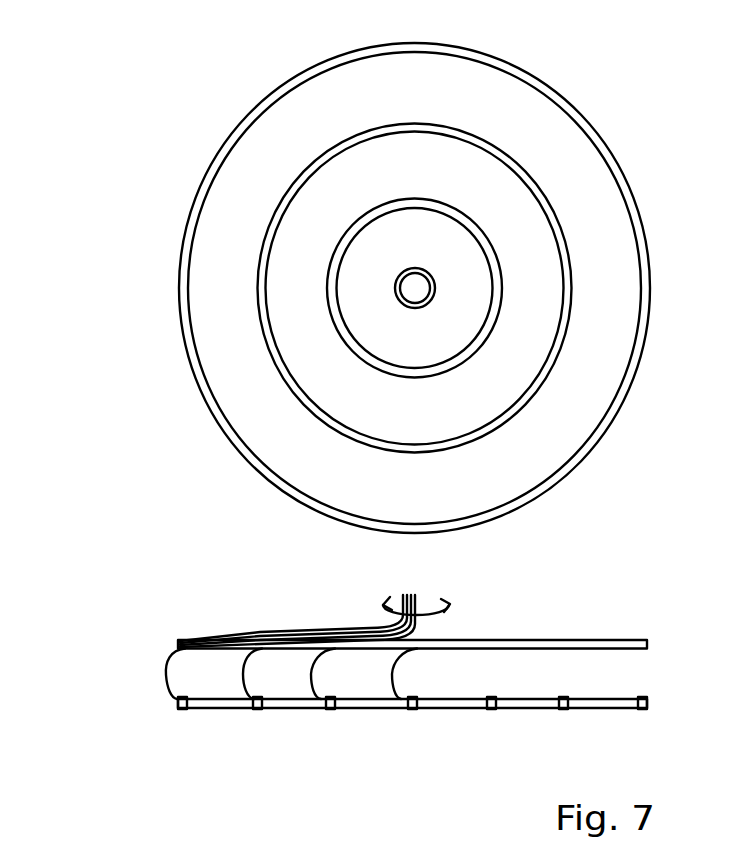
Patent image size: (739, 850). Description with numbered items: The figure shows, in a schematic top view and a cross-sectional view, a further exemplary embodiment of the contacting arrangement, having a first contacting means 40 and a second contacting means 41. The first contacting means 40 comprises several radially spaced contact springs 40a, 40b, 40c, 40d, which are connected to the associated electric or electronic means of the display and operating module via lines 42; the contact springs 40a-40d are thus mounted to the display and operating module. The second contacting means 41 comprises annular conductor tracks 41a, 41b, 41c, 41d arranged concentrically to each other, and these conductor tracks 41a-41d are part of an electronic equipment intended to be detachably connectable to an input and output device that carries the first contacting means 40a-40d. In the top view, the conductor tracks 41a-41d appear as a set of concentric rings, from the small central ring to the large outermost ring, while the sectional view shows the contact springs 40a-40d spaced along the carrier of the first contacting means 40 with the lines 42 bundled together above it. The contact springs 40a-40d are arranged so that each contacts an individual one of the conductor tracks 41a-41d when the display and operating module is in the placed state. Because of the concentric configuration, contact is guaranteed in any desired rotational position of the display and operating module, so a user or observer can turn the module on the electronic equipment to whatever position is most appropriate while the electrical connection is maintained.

The first contacting means 40 is at (350, 674).
The contact spring 40a is at (397, 672).
The contact spring 40b is at (312, 683).
The contact spring 40c is at (243, 672).
The contact spring 40d is at (168, 656).
The second contacting means 41 is at (388, 393).
The annular conductor track 41a is at (405, 268).
The annular conductor track 41b is at (424, 200).
The annular conductor track 41c is at (434, 125).
The annular conductor track 41d is at (472, 52).
The lines 42 is at (410, 597).